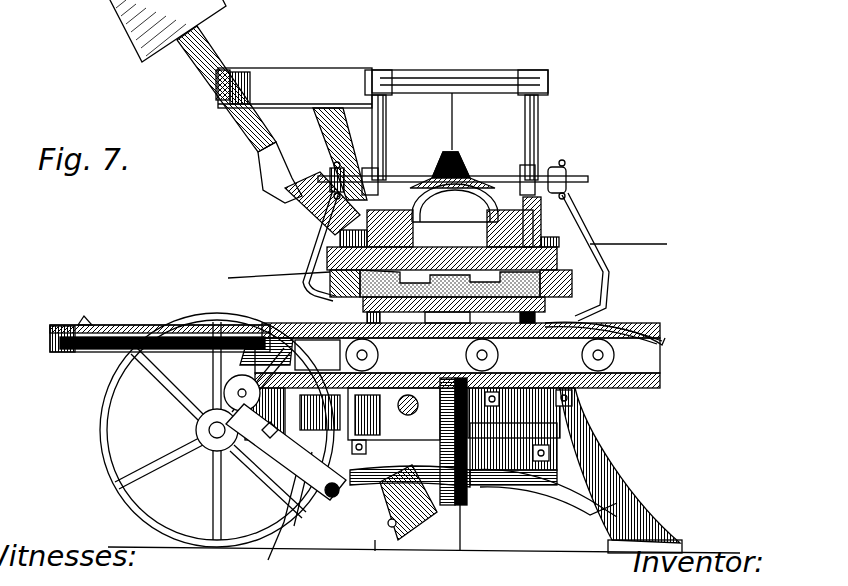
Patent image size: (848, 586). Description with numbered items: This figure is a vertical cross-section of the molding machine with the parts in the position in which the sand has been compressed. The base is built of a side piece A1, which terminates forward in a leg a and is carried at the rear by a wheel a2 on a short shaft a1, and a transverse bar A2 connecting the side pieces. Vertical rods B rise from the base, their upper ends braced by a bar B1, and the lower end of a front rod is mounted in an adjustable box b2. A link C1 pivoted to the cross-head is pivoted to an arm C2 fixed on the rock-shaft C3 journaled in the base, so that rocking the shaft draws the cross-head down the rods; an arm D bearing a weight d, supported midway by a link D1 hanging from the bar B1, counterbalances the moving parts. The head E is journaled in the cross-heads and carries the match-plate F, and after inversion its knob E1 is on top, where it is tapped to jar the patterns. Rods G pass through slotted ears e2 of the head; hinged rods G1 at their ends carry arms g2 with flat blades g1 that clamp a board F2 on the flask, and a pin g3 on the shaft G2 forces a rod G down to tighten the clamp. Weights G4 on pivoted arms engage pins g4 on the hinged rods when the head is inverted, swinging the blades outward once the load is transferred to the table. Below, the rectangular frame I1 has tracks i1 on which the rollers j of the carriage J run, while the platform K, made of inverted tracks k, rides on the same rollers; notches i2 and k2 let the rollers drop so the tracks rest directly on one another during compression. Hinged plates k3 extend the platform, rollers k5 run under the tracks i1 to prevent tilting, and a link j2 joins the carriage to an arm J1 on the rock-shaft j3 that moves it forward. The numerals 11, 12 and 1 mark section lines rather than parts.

The weight d is at (168, 31).
The arm D is at (300, 196).
The link D1 is at (320, 135).
The vertical rod B is at (386, 130).
The bar B1 is at (398, 72).
The projecting knob E1 is at (452, 148).
The rod G is at (588, 182).
The hinged rod G1 is at (572, 192).
The shaft G2 is at (455, 203).
The weight G4 is at (362, 160).
The flat blade g1 is at (565, 285).
The arm g2 is at (449, 261).
The pin g3 is at (475, 183).
The projecting pin g4 is at (558, 168).
The slotted ear e2 is at (386, 162).
The head E is at (540, 218).
The match-plate F is at (565, 262).
The board F2 is at (578, 321).
The platform K is at (300, 328).
The inverted track k is at (266, 351).
The notch k2 is at (435, 312).
The plate k3 is at (640, 330).
The roller k5 is at (232, 388).
The track i1 is at (660, 367).
The rectangular frame I1 is at (655, 382).
The notch i2 is at (596, 400).
The roller j is at (481, 355).
The carriage J is at (317, 355).
The link j2 is at (342, 421).
The rock-shaft j3 is at (374, 545).
The arm J1 is at (271, 552).
The bolt 11 is at (590, 394).
The bracket plate 12 is at (620, 452).
The box b2 is at (590, 432).
The leg a is at (662, 537).
The short shaft a1 is at (210, 446).
The wheel a2 is at (108, 435).
The side piece A1 is at (258, 455).
The transverse bar A2 is at (475, 490).
The link C1 is at (400, 495).
The arm C2 is at (380, 490).
The rock-shaft C3 is at (320, 500).
The base 1 is at (462, 520).